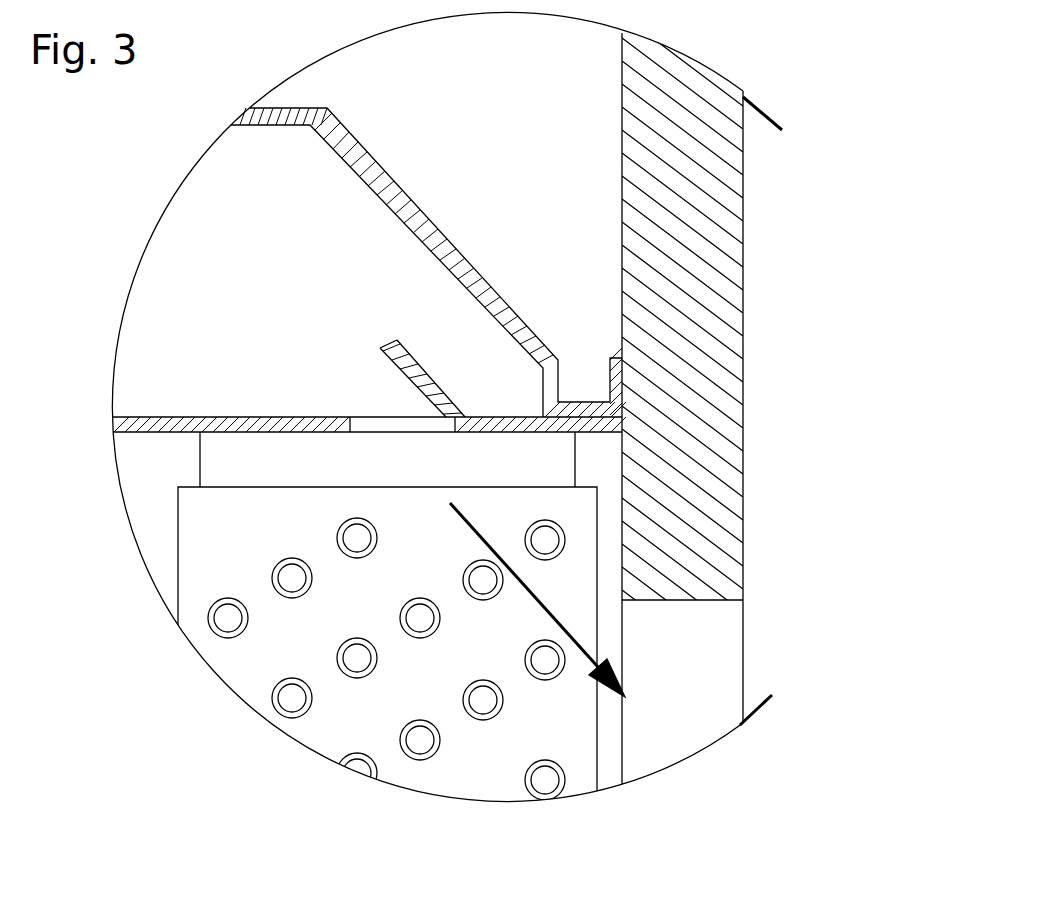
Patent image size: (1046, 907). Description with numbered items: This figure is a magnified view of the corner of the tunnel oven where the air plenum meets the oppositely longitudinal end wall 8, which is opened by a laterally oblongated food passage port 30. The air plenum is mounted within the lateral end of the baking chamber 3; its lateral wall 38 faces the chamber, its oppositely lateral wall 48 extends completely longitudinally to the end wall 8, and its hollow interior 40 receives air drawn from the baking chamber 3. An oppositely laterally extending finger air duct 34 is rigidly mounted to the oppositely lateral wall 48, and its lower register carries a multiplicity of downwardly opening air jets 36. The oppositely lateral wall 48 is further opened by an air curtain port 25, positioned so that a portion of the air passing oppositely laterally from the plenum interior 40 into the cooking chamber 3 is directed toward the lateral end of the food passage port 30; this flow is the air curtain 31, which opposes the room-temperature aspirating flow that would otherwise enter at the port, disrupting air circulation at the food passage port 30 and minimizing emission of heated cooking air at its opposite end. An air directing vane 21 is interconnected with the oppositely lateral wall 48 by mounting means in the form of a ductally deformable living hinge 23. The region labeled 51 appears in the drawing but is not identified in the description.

The baking chamber 3 is at (152, 486).
The oppositely longitudinal end wall 8 is at (688, 300).
The air directing vane 21 is at (392, 366).
The ductally deformable living hinge 23 is at (458, 433).
The air curtain port 25 is at (393, 432).
The food passage port 30 is at (686, 665).
The air curtain 31 is at (537, 593).
The upper finger air duct 34 is at (247, 660).
The downwardly opening air jets 36 is at (292, 702).
The lateral wall of the air plenum 38 is at (443, 242).
The hollow interior of the plenum 40 is at (266, 245).
The oppositely lateral wall of the air plenum 48 is at (166, 417).
The upper space 51 is at (516, 74).